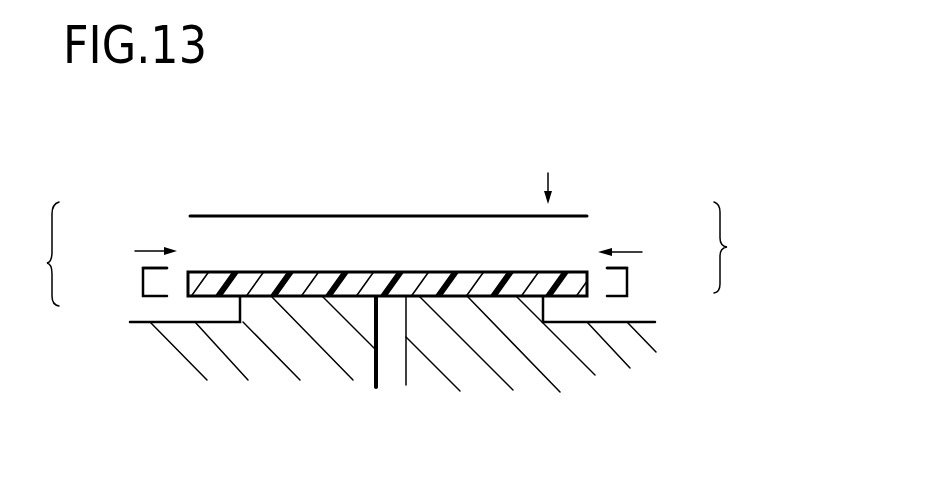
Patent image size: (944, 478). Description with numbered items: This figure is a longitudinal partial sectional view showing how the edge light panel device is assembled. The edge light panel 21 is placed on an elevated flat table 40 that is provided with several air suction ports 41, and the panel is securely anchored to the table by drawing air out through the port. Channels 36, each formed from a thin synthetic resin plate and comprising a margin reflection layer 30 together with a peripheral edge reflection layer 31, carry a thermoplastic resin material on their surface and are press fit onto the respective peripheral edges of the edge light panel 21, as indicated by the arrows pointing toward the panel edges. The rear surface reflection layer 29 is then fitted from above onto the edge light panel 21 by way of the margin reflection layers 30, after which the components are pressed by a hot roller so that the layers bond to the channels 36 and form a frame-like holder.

The edge light panel 21 is at (350, 272).
The rear surface reflection layer 29 is at (268, 216).
The margin reflection layer 30 is at (143, 267).
The peripheral edge reflection layer 31 is at (142, 285).
The channel 36 is at (393, 254).
The elevated flat table 40 is at (513, 308).
The air suction port 41 is at (392, 368).